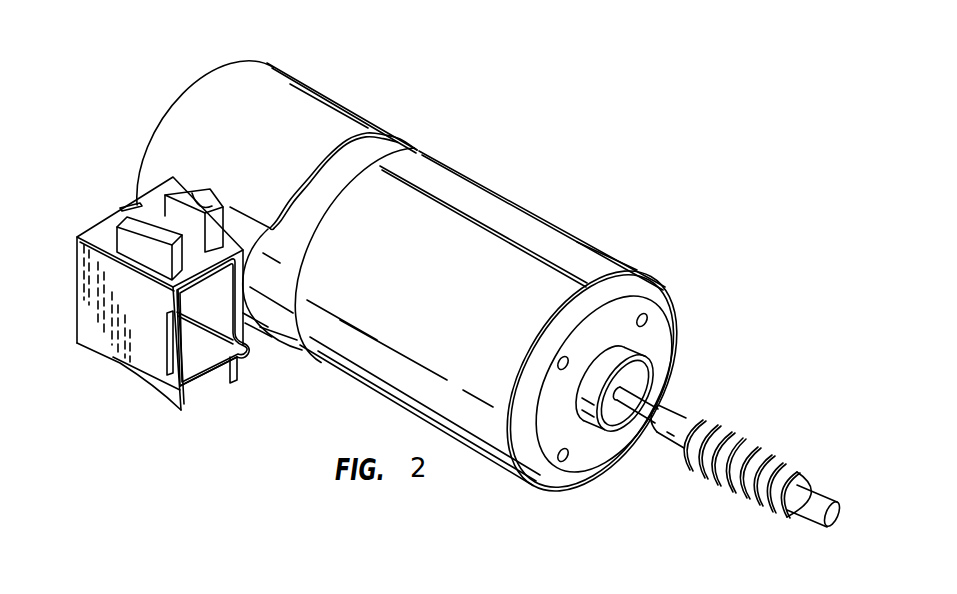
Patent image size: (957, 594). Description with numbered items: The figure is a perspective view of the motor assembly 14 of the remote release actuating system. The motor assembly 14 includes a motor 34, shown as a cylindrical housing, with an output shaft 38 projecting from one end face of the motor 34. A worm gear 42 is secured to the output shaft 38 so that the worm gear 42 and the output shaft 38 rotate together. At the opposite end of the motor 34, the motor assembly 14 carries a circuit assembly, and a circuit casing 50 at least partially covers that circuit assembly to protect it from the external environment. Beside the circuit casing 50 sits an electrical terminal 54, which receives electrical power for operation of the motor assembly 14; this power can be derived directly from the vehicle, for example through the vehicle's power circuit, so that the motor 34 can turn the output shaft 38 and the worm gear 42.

The motor assembly 14 is at (514, 146).
The motor 34 is at (543, 242).
The output shaft 38 is at (650, 400).
The worm gear 42 is at (750, 448).
The circuit casing 50 is at (257, 90).
The electrical terminal 54 is at (100, 230).